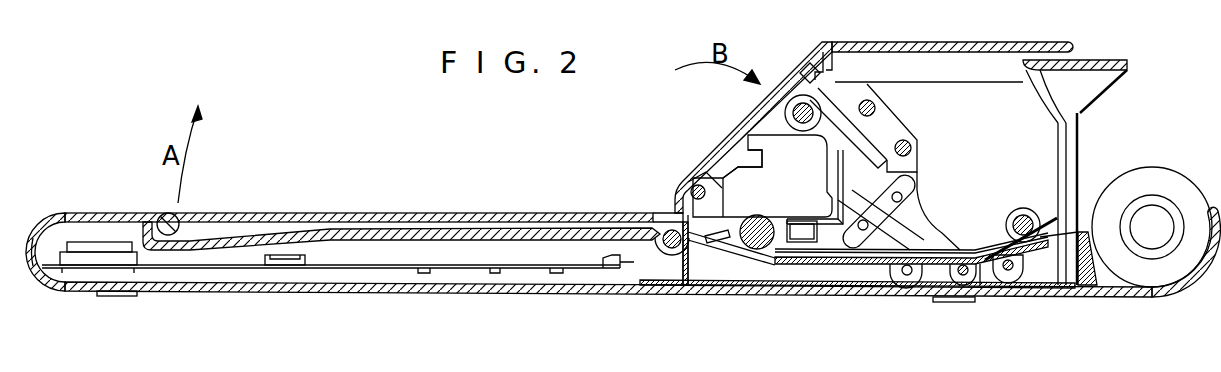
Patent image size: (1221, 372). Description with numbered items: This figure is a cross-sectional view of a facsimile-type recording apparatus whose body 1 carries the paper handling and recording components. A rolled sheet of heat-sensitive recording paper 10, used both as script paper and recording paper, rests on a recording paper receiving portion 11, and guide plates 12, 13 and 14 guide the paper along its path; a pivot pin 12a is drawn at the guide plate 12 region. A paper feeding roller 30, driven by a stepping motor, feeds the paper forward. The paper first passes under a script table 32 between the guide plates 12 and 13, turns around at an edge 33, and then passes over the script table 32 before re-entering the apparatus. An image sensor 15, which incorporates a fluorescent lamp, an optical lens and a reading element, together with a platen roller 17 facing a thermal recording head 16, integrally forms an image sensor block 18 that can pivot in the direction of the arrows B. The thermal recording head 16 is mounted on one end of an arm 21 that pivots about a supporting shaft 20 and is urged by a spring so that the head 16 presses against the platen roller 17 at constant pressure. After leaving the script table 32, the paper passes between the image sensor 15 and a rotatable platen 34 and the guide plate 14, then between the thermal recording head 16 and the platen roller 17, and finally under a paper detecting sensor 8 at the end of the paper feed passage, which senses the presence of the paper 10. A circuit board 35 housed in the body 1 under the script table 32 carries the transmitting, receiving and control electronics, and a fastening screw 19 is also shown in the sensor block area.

The body 1 is at (870, 292).
The paper detecting sensor 8 is at (813, 62).
The thermosensitive recording paper 10 is at (1163, 177).
The recording paper receiving portion 11 is at (1178, 294).
The guide plate 12 is at (1040, 266).
The pivot pin 12a is at (1010, 272).
The guide plate 13 is at (990, 245).
The guide plate 14 is at (836, 228).
The image sensor 15 is at (785, 186).
The thermal recording head 16 is at (838, 105).
The platen roller 17 is at (800, 106).
The image sensor block 18 is at (740, 157).
The screw 19 is at (674, 189).
The supporting shaft 20 is at (912, 145).
The arm 21 is at (886, 115).
The paper feeding roller 30 is at (1021, 208).
The script table 32 is at (277, 213).
The edge 33 is at (177, 217).
The rotatable platen 34 is at (757, 243).
The circuit board 35 is at (345, 268).